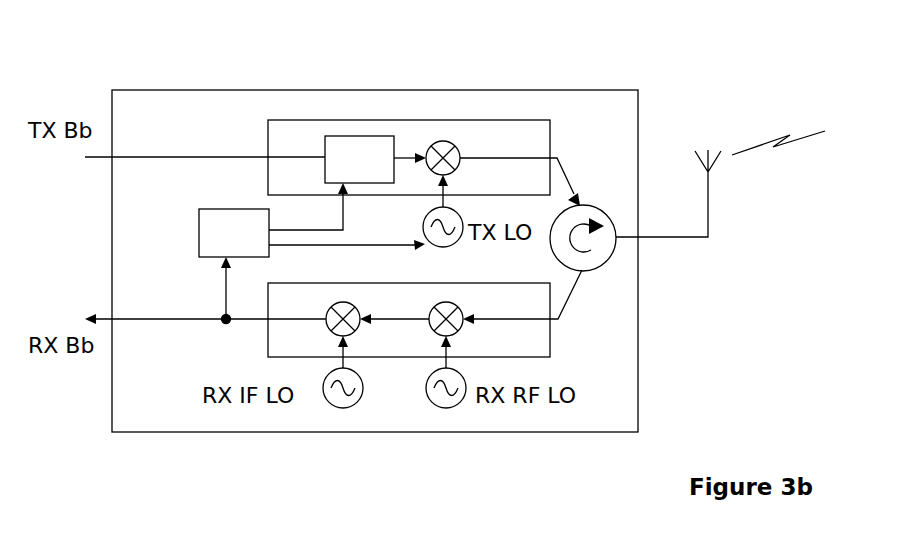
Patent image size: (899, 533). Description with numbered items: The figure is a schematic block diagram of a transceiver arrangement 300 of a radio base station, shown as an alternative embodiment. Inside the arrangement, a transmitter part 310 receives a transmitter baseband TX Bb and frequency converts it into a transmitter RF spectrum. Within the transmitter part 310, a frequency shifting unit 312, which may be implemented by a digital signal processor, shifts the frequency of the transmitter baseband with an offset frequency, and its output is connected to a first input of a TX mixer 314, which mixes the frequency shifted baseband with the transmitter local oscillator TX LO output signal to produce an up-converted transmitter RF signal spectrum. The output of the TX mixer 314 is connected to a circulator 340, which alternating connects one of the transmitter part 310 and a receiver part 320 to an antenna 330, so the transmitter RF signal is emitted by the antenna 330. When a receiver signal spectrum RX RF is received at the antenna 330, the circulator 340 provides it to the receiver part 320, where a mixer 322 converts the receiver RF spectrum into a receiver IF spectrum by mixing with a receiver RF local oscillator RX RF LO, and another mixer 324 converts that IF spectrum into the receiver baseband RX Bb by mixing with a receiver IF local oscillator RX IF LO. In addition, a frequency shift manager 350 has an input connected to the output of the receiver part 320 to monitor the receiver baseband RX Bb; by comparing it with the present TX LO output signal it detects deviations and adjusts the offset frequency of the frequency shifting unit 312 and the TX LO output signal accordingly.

The transceiver arrangement 300 is at (335, 90).
The transmitter part 310 is at (530, 120).
The frequency shifting unit 312 is at (325, 136).
The TX mixer 314 is at (440, 120).
The receiver part 320 is at (550, 337).
The mixer 322 is at (470, 312).
The another mixer 324 is at (366, 312).
The antenna 330 is at (708, 213).
The circulator 340 is at (598, 208).
The frequency shift manager 350 is at (199, 232).